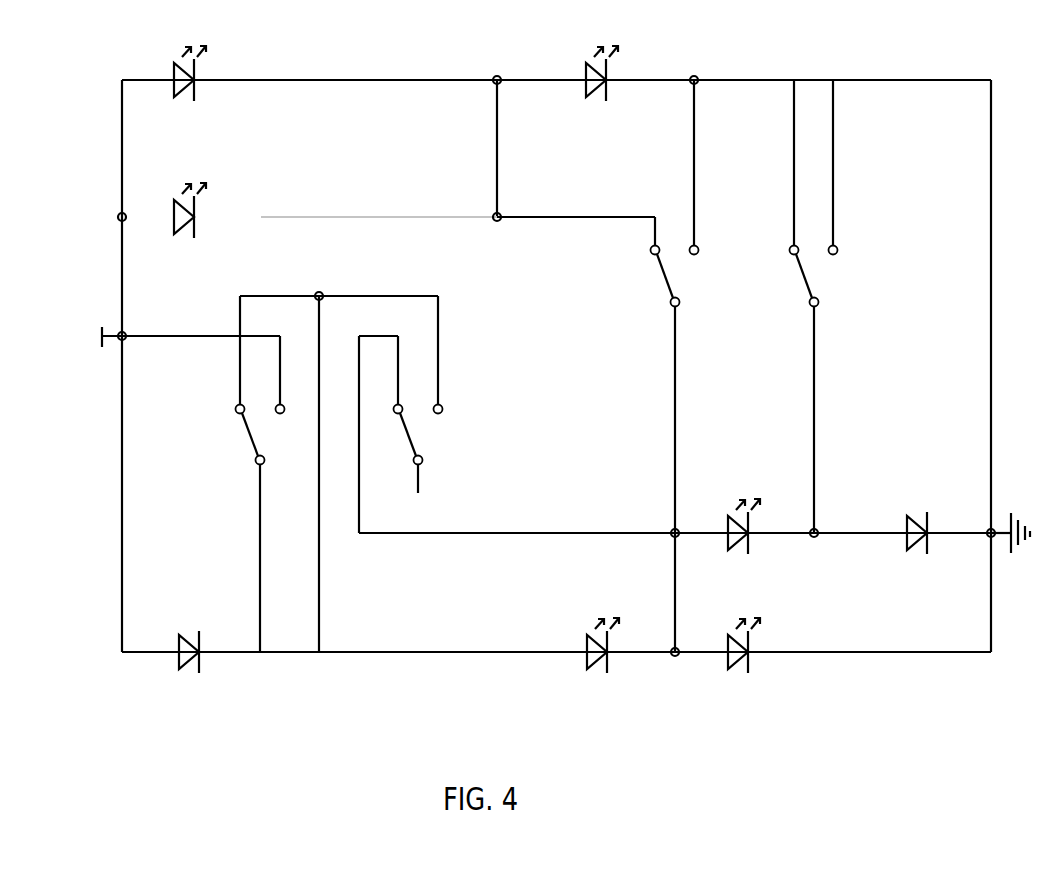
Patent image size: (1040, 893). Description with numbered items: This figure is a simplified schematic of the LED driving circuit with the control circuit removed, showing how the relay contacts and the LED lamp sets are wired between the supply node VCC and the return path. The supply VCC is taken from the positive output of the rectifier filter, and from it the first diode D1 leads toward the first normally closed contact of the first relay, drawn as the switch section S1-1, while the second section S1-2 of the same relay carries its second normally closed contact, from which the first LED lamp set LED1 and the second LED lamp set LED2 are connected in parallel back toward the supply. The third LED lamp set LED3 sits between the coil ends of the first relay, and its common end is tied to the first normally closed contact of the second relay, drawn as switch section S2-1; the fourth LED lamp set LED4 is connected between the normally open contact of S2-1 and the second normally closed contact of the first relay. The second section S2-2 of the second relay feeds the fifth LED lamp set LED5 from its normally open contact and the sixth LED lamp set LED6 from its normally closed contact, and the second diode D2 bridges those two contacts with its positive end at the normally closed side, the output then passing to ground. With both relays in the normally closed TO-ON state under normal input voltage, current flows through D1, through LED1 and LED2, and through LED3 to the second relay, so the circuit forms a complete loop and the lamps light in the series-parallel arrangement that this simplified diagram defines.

The positive voltage end VCC is at (147, 335).
The first LED lamp set LED1 is at (203, 198).
The second LED lamp set LED2 is at (203, 59).
The third LED lamp set LED3 is at (620, 630).
The fourth LED lamp set LED4 is at (624, 53).
The fifth LED lamp set LED5 is at (757, 630).
The sixth LED lamp set LED6 is at (757, 513).
The first diode D1 is at (178, 639).
The second diode D2 is at (907, 517).
The first relay first contact set S1-1 is at (266, 388).
The first relay second contact set S1-2 is at (427, 394).
The second relay first contact set S2-1 is at (686, 200).
The second relay second contact set S2-2 is at (825, 208).